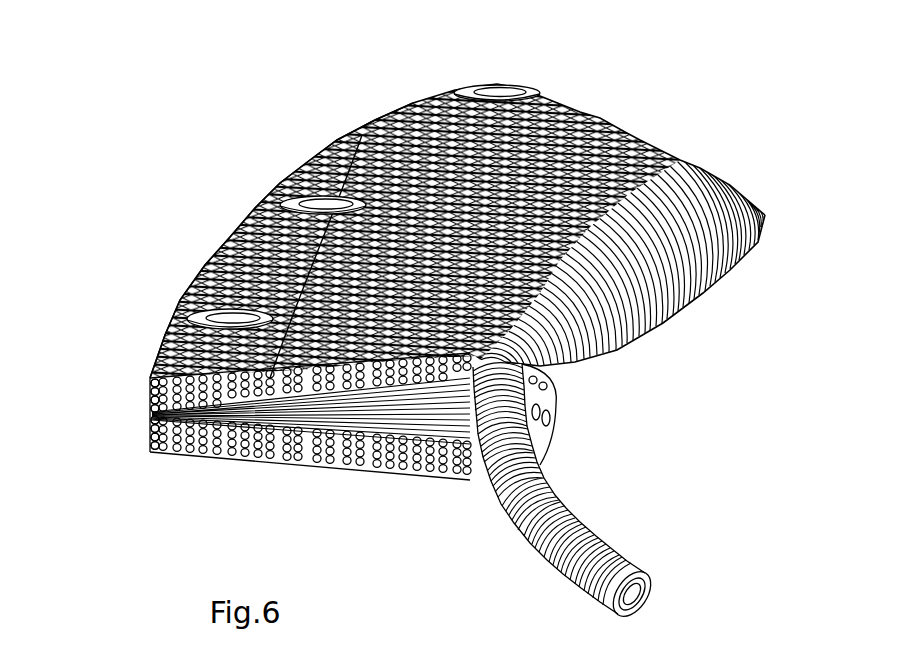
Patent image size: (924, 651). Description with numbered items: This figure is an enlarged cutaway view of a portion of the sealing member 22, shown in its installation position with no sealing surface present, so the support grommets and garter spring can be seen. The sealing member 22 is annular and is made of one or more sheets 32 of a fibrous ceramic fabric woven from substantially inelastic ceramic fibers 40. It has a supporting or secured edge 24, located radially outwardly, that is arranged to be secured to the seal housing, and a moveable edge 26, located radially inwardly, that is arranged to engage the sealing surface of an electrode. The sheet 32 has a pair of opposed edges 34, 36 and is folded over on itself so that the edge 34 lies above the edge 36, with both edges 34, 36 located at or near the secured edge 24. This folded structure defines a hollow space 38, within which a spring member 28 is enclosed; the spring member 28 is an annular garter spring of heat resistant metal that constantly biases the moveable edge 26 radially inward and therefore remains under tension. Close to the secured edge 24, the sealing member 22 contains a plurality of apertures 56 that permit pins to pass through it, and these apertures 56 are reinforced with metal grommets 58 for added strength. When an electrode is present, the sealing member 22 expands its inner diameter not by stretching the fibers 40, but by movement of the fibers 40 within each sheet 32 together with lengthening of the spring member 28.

The sealing member 22 is at (600, 118).
The supporting edge 24 is at (232, 237).
The moveable edge 26 is at (680, 282).
The spring member 28 is at (645, 565).
The sheet 32 is at (150, 413).
The edge 34 is at (150, 388).
The edge 36 is at (153, 447).
The hollow space 38 is at (392, 418).
The fibers 40 is at (677, 222).
The apertures 56 is at (212, 322).
The metal grommets 58 is at (245, 322).